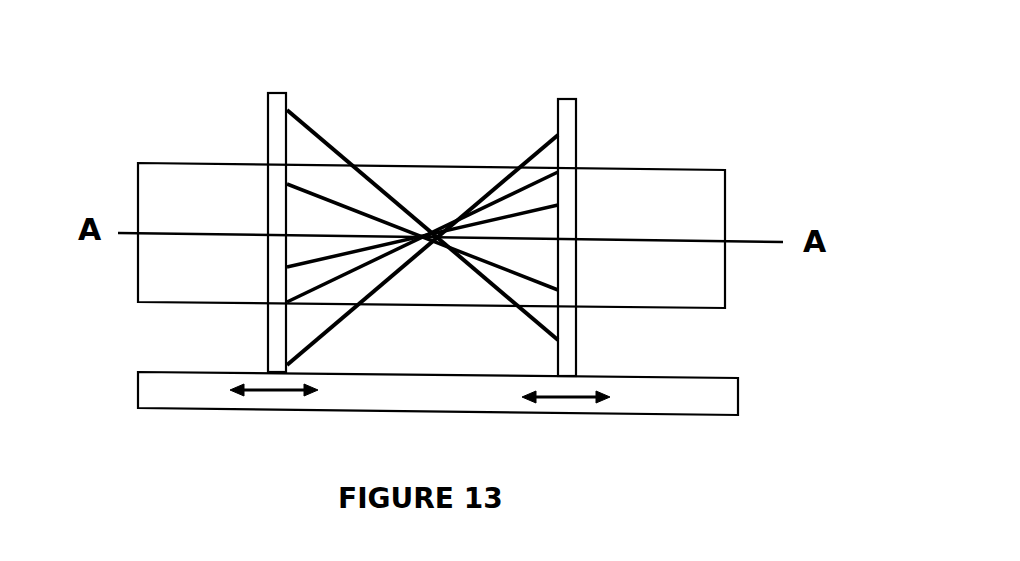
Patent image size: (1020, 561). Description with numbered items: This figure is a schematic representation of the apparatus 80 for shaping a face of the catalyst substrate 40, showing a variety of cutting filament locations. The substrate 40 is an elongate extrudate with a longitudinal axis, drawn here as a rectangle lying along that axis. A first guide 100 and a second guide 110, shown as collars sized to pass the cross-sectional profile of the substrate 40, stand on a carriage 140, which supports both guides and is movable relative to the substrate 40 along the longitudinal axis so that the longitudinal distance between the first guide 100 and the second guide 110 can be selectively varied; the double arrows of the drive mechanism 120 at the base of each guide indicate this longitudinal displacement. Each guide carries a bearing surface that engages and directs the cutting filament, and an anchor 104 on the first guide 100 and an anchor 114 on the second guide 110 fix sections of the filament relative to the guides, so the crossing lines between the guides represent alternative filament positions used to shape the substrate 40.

The apparatus 80 is at (722, 121).
The catalyst substrate 40 is at (708, 180).
The first guide 100 is at (278, 132).
The second guide 110 is at (576, 112).
The anchor 104 is at (287, 110).
The anchor 114 is at (556, 338).
The drive mechanism 120 is at (282, 376).
The carriage 140 is at (738, 400).